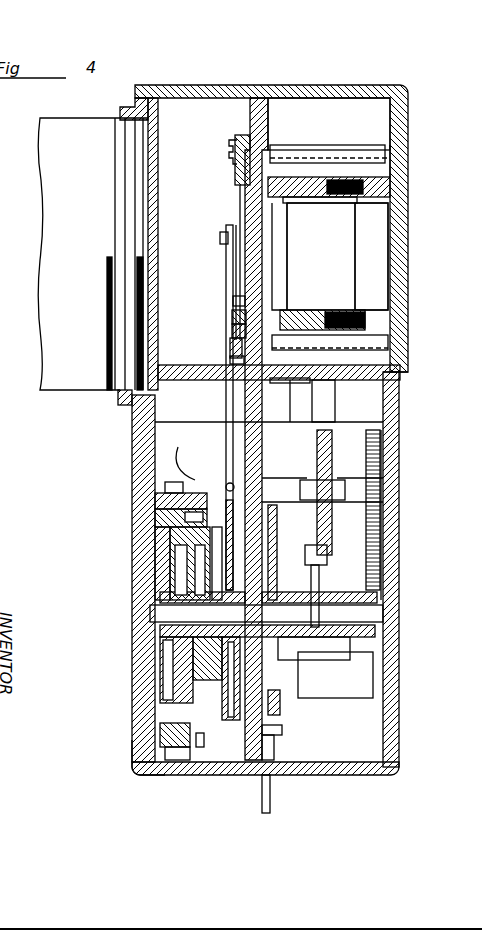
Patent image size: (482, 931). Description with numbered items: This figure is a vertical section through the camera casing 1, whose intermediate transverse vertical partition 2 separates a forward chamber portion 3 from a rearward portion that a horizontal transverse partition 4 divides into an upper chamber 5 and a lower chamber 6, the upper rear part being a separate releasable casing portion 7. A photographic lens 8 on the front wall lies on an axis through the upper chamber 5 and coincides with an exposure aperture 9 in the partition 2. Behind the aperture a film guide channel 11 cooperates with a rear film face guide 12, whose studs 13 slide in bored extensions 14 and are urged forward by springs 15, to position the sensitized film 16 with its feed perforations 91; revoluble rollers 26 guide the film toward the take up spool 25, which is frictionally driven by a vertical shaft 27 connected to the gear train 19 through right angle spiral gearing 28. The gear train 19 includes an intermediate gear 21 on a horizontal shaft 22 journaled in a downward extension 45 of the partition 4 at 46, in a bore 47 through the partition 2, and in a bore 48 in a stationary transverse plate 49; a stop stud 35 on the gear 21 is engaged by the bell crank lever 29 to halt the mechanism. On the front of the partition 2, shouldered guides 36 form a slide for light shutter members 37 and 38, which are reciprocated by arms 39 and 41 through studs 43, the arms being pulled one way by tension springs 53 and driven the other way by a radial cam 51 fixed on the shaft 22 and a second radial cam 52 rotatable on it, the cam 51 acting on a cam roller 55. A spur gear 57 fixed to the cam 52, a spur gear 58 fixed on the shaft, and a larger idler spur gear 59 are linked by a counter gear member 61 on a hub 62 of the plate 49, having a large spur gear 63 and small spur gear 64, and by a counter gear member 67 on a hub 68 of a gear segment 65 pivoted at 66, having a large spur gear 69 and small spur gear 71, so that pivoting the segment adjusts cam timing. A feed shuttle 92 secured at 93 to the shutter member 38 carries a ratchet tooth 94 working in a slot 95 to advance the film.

The camera casing 1 is at (135, 97).
The intermediate transverse vertical partition 2 is at (268, 112).
The forward chamber portion 3 is at (175, 165).
The horizontal transverse partition 4 is at (396, 361).
The upper chamber 5 is at (368, 110).
The lower chamber 6 is at (395, 722).
The separate casing portion 7 is at (408, 115).
The photographic lens 8 is at (45, 162).
The exposure aperture 9 is at (240, 192).
The film guide channel 11 is at (282, 176).
The rear film face guide 12 is at (275, 232).
The studs 13 is at (312, 180).
The bored extensions 14 is at (363, 180).
The springs 15 is at (321, 203).
The sensitized film 16 is at (277, 275).
The multiplying spur gear train 19 is at (385, 528).
The intermediate gear 21 is at (278, 528).
The horizontal shaft 22 is at (383, 632).
The take up spool 25 is at (408, 150).
The revoluble rollers 26 is at (290, 250).
The revoluble vertical shaft 27 is at (330, 400).
The right angle spiral gearing 28 is at (332, 480).
The bell crank lever 29 is at (270, 798).
The stop stud 35 is at (280, 708).
The shouldered guides 36 is at (236, 164).
The light shutter member 37 is at (235, 227).
The light shutter member 38 is at (245, 210).
The arm 39 is at (236, 280).
The arm 41 is at (266, 750).
The studs 43 is at (224, 242).
The downward extension 45 is at (385, 455).
The journal 46 is at (383, 600).
The bore 47 is at (304, 584).
The bore 48 is at (158, 615).
The stationary transverse plate 49 is at (155, 440).
The radial cam 51 is at (280, 678).
The second radial cam 52 is at (225, 500).
The tension springs 53 is at (272, 482).
The cam roller 55 is at (282, 733).
The spur gear 57 is at (192, 700).
The spur gear 58 is at (170, 575).
The idler spur gear 59 is at (160, 655).
The counter gear member 61 is at (160, 732).
The hub 62 is at (170, 700).
The large spur gear 63 is at (190, 775).
The small spur gear 64 is at (150, 775).
The gear segment 65 is at (165, 555).
The pivot 66 is at (160, 597).
The counter gear member 67 is at (160, 498).
The hub 68 is at (152, 515).
The large spur gear 69 is at (177, 454).
The small spur gear 71 is at (165, 482).
The feed perforations 91 is at (388, 342).
The feed shuttle 92 is at (242, 318).
The mounting 93 is at (242, 332).
The ratchet tooth 94 is at (295, 380).
The slot 95 is at (240, 302).